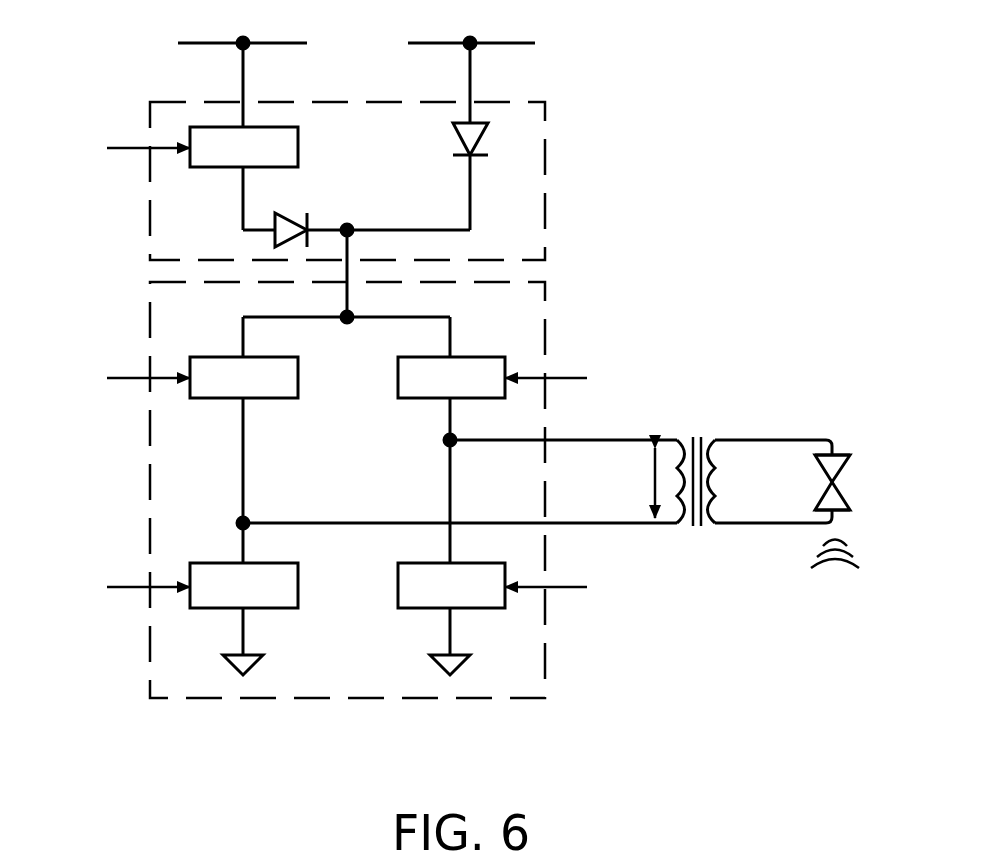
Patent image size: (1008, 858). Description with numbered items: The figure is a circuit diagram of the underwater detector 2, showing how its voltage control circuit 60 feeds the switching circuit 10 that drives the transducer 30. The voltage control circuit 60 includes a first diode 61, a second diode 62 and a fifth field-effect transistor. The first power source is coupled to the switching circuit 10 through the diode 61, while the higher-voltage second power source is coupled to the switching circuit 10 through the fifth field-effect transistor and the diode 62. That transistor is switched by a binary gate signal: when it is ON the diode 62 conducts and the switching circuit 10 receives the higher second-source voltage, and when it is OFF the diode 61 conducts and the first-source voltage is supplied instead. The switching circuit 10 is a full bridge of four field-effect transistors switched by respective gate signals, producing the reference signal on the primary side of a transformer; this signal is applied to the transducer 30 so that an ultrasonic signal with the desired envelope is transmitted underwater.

The underwater detector 2 is at (458, 353).
The switching circuit 10 is at (358, 464).
The transducer 30 is at (787, 464).
The voltage control circuit 60 is at (358, 151).
The diode 61 is at (453, 140).
The diode 62 is at (294, 216).